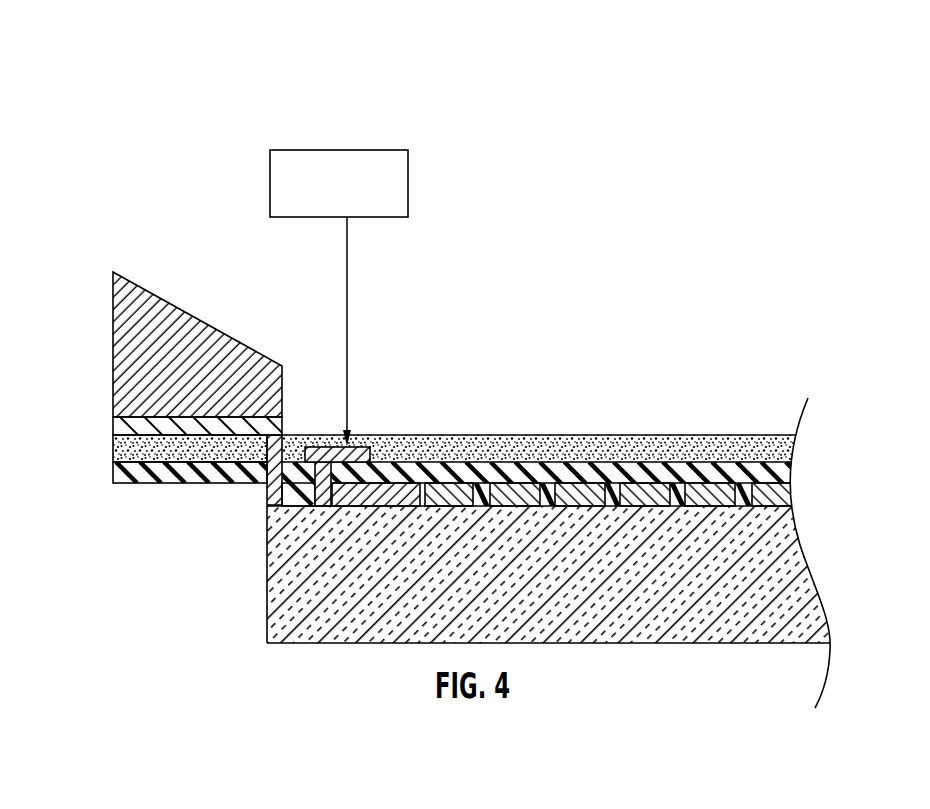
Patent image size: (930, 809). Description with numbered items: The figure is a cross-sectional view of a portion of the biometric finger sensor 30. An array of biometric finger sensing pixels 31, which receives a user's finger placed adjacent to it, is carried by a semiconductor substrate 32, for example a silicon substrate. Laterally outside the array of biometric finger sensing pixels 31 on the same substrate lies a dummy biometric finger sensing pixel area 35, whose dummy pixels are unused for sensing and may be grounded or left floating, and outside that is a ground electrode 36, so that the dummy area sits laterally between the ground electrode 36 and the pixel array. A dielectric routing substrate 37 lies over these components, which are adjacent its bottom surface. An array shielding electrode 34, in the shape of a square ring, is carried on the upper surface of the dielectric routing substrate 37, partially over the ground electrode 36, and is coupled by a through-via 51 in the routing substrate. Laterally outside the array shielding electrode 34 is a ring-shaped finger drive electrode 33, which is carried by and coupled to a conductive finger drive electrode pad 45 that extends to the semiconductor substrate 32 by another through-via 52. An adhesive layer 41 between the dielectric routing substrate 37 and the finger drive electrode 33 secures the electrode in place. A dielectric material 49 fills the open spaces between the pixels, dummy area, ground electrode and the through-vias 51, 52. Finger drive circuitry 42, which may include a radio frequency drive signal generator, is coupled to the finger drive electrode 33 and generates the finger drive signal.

The biometric finger sensor 30 is at (148, 119).
The array of biometric finger sensing pixels 31 is at (715, 505).
The semiconductor substrate 32 is at (267, 617).
The finger drive electrode 33 is at (135, 372).
The array shielding electrode 34 is at (296, 439).
The dummy biometric finger sensing pixel area 35 is at (453, 486).
The ground electrode 36 is at (370, 508).
The dielectric routing substrate 37 is at (422, 513).
The adhesive layer 41 is at (120, 447).
The finger drive circuitry 42 is at (410, 175).
The conductive finger drive electrode pad 45 is at (122, 427).
The dielectric material 49 is at (297, 505).
The through-via 51 is at (322, 507).
The through-via 52 is at (273, 495).